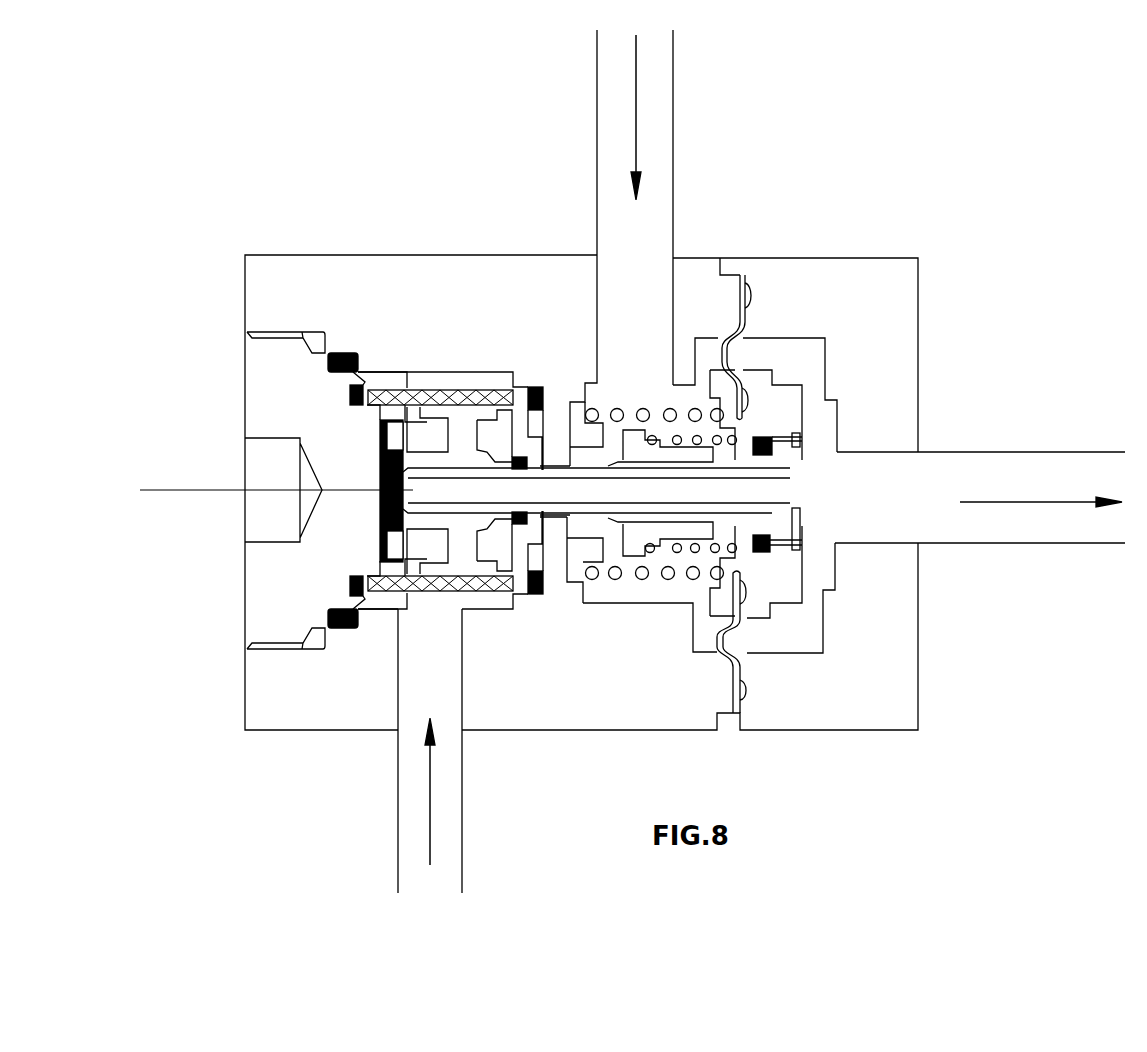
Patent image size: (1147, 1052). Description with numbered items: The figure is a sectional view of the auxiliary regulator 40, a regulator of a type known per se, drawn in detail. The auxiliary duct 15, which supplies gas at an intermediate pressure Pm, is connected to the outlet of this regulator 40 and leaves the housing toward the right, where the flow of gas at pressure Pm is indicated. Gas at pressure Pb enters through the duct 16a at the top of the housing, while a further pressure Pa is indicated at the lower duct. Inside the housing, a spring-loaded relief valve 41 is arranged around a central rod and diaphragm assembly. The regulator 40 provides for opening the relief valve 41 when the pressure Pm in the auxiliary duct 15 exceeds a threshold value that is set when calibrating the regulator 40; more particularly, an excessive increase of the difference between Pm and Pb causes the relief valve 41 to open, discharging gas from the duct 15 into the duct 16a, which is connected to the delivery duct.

The auxiliary regulator 40 is at (228, 167).
The duct 16a is at (597, 140).
The auxiliary duct 15 is at (999, 386).
The relief valve 41 is at (660, 620).
The pressure Pa is at (410, 800).
The pressure Pb is at (649, 103).
The intermediate pressure Pm is at (1048, 485).